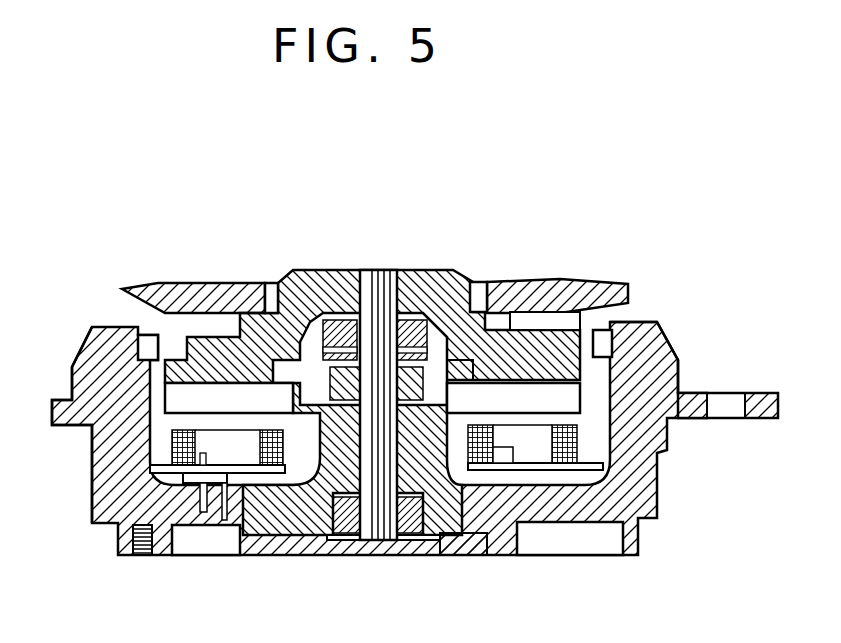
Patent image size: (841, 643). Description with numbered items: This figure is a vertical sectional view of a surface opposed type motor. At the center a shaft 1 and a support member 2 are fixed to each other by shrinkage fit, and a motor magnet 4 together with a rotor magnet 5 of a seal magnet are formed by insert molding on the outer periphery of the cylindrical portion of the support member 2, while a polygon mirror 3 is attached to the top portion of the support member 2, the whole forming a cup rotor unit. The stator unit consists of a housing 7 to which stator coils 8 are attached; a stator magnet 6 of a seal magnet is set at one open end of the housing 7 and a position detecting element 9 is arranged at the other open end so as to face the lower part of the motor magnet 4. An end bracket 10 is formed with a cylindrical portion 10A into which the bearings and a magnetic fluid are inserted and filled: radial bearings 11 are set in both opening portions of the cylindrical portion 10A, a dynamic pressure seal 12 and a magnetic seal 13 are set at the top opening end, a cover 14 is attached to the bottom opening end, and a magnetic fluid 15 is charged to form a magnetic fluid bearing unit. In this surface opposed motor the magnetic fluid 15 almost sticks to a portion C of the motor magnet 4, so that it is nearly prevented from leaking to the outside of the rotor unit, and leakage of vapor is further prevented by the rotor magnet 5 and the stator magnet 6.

The shaft 1 is at (372, 270).
The support member 2 is at (452, 285).
The polygon mirror 3 is at (550, 283).
The motor magnet 4 is at (573, 402).
The rotor magnet 5 is at (577, 290).
The stator magnet 6 is at (607, 343).
The housing 7 is at (672, 363).
The stator coils 8 is at (542, 453).
The position detecting element 9 is at (507, 463).
The end bracket 10 is at (253, 540).
The cylindrical portion 10A is at (320, 420).
The radial bearings 11 is at (272, 313).
The dynamic pressure seal 12 is at (333, 312).
The magnetic seal 13 is at (420, 318).
The cover 14 is at (467, 547).
The magnetic fluid 15 is at (438, 533).
The portion of the motor magnet C is at (487, 383).